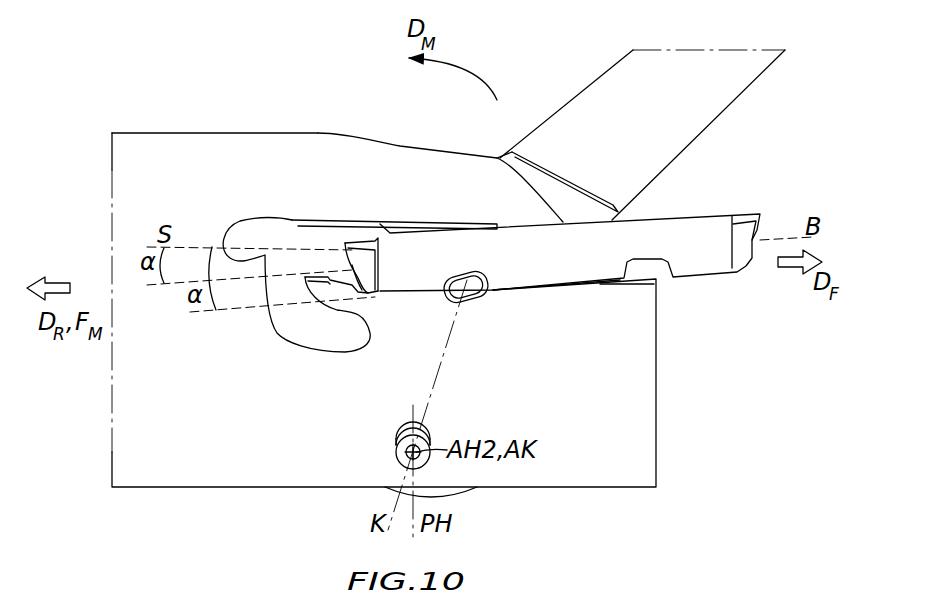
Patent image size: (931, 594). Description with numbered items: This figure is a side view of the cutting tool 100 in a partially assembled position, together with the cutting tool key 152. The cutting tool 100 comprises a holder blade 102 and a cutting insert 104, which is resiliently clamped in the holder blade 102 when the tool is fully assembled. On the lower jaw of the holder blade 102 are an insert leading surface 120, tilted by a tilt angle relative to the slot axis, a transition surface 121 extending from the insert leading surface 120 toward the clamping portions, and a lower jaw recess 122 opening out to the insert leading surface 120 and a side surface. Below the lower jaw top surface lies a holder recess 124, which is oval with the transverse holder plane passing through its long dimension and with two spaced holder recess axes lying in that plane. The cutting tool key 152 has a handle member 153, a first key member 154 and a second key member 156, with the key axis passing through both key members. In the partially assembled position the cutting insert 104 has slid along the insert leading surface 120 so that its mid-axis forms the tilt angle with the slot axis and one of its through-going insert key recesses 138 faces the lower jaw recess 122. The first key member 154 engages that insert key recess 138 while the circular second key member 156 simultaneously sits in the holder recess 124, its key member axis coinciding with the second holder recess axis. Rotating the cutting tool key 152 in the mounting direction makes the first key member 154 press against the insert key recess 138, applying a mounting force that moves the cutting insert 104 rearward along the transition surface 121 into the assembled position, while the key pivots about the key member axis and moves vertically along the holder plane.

The cutting tool 100 is at (322, 50).
The holder blade 102 is at (240, 133).
The cutting insert 104 is at (710, 201).
The insert leading surface 120 is at (417, 290).
The transition surface 121 is at (353, 289).
The lower jaw recess 122 is at (496, 297).
The holder recess 124 is at (434, 427).
The insert key recess 138 is at (486, 272).
The cutting tool key 152 is at (621, 86).
The handle member 153 is at (725, 67).
The first key member 154 is at (473, 300).
The second key member 156 is at (399, 464).